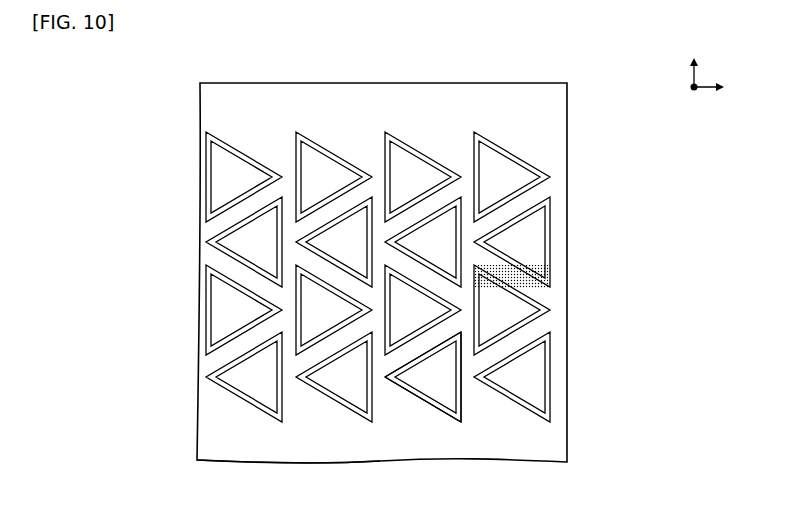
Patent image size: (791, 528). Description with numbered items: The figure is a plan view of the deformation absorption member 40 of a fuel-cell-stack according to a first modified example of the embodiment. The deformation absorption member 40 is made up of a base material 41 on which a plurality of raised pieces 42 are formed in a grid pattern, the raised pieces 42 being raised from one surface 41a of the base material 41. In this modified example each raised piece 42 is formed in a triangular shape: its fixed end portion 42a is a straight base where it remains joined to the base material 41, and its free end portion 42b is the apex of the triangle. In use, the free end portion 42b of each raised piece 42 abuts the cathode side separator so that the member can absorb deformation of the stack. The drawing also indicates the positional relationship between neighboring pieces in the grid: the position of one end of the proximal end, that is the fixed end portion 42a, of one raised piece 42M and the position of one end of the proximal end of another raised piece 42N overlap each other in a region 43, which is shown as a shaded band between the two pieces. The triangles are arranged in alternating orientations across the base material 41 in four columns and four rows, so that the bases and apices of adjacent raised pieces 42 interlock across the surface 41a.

The deformation absorption member 40 is at (99, 54).
The base material 41 is at (200, 328).
The one surface of the base material 41a is at (218, 440).
The raised piece 42 is at (438, 388).
The fixed end portion 42a is at (462, 380).
The free end portion 42b is at (388, 378).
The raised piece 42N is at (538, 222).
The raised piece 42M is at (517, 310).
The region 43 is at (552, 288).